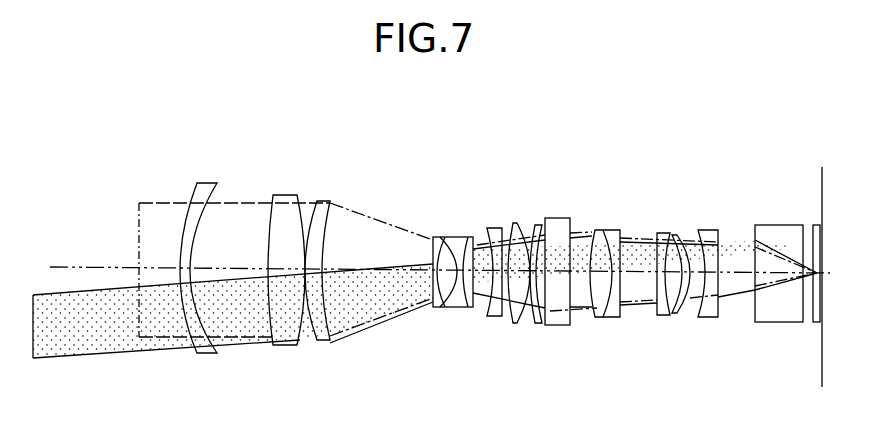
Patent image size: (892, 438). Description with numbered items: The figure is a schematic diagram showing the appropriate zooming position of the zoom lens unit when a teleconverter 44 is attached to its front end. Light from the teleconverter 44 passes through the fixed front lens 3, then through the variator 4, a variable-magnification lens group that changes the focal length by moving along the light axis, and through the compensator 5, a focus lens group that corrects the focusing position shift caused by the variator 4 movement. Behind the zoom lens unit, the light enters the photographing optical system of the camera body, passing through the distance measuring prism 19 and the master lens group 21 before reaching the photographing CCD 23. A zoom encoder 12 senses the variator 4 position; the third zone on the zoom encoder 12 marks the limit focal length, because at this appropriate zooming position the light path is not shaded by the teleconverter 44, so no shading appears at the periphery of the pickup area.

The teleconverter 44 is at (214, 182).
The front lens 3 is at (296, 186).
The variator 4 is at (448, 238).
The compensator 5 is at (490, 228).
The distance measuring prism 19 is at (556, 218).
The master lens group 21 is at (713, 205).
The zoom encoder 12 is at (772, 225).
The photographing CCD 23 is at (820, 247).